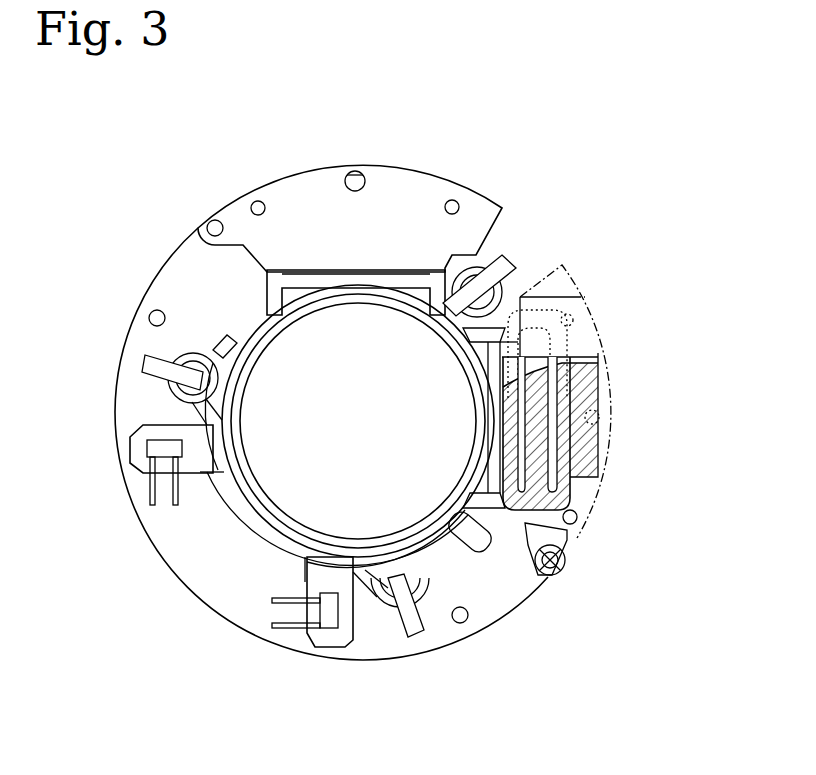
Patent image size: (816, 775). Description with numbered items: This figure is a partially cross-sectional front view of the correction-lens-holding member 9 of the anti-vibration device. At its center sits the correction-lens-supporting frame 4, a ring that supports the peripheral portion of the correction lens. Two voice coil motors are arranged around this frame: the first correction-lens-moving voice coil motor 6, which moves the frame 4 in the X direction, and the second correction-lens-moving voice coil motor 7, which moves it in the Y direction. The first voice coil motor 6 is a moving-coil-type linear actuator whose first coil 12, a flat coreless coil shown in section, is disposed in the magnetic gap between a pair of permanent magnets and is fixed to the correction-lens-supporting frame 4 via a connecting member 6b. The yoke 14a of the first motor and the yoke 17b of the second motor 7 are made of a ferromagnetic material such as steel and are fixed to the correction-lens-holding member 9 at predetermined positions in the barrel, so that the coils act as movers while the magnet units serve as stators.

The correction-lens-supporting frame 4 is at (262, 515).
The first correction-lens-moving voice coil motor 6 is at (624, 408).
The connecting member 6b is at (507, 315).
The second correction-lens-moving voice coil motor 7 is at (307, 197).
The correction-lens-holding member 9 is at (566, 234).
The first coil 12 is at (565, 485).
The yoke 14a is at (586, 332).
The yoke 17b is at (400, 188).